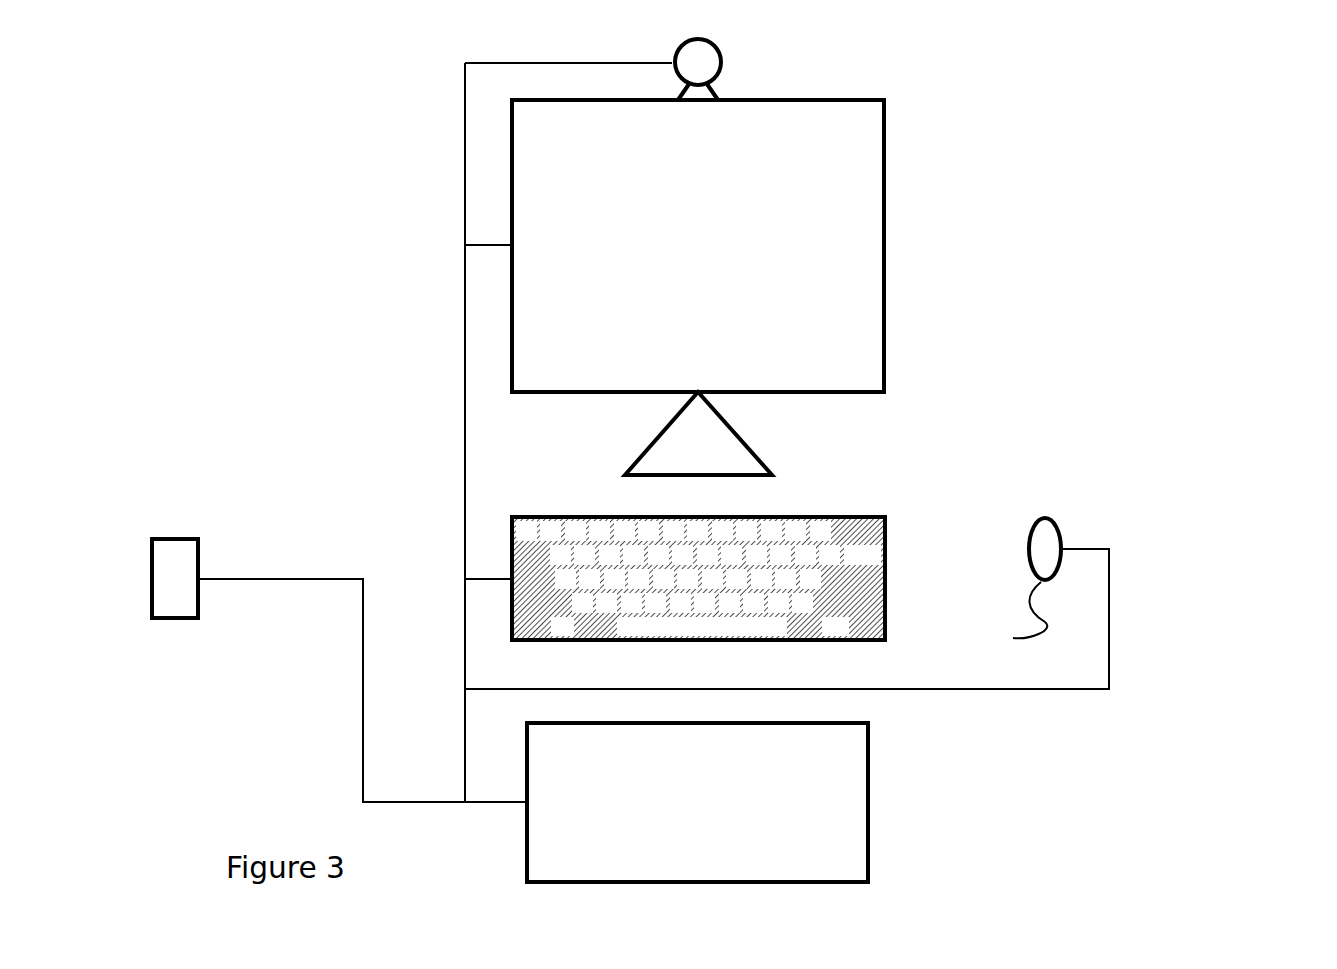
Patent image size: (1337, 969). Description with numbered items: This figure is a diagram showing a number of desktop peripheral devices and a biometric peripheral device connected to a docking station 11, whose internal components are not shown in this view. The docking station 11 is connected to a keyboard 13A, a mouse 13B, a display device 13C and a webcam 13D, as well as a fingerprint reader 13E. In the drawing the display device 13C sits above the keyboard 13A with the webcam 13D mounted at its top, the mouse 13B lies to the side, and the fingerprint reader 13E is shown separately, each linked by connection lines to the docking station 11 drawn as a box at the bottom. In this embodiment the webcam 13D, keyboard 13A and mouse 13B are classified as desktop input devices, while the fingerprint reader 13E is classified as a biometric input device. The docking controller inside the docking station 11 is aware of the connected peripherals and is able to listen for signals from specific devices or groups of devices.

The docking station 11 is at (868, 803).
The keyboard 13A is at (885, 577).
The mouse 13B is at (1065, 545).
The display device 13C is at (885, 245).
The webcam 13D is at (717, 46).
The fingerprint reader 13E is at (174, 539).